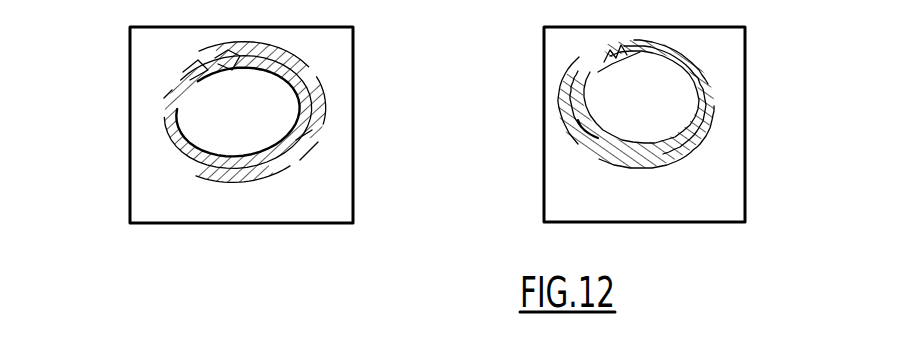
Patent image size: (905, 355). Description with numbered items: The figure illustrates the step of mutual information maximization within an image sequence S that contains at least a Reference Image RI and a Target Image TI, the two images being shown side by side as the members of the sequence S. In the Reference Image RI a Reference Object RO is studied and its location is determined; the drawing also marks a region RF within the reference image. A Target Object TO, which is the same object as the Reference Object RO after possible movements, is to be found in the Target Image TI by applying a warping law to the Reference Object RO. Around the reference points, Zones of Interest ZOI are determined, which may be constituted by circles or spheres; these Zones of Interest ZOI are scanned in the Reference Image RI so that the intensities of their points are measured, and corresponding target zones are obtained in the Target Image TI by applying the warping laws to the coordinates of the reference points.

The zone of interest ZOI is at (435, 111).
The reference image RI is at (398, 181).
The reference object RO is at (252, 120).
The reference feature region RF is at (317, 88).
The target image TI is at (755, 165).
The target object TO is at (660, 103).
The image sequence S is at (558, 233).